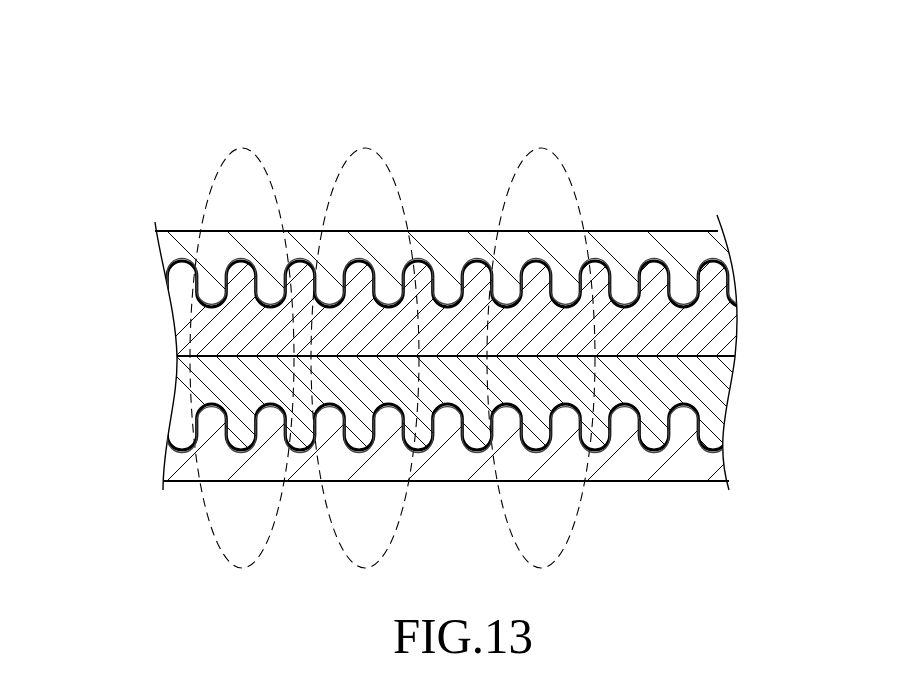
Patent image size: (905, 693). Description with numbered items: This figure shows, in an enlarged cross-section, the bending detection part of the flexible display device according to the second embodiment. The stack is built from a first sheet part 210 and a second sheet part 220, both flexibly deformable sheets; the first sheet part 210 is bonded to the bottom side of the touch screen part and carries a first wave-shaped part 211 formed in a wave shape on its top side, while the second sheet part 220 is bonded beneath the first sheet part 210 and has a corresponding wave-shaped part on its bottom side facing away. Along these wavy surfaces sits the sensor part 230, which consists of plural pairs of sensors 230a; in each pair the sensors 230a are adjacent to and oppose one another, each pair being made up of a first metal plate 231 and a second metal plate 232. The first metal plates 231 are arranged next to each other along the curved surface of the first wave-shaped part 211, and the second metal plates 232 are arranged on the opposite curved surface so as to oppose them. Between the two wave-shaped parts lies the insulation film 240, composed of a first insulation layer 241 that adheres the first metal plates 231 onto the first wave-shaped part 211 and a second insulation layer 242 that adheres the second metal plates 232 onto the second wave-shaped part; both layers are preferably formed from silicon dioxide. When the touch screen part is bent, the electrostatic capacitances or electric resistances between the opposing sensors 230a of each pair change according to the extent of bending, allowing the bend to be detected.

The first sheet part 210 is at (692, 252).
The first wave-shaped part 211 is at (652, 262).
The second sheet part 220 is at (693, 463).
The sensor part 230 is at (602, 78).
The sensors 230a is at (97, 392).
The first metal plate 231 is at (240, 258).
The second metal plate 232 is at (231, 452).
The insulation film 240 is at (792, 322).
The first insulation layer 241 is at (713, 328).
The second insulation layer 242 is at (713, 382).